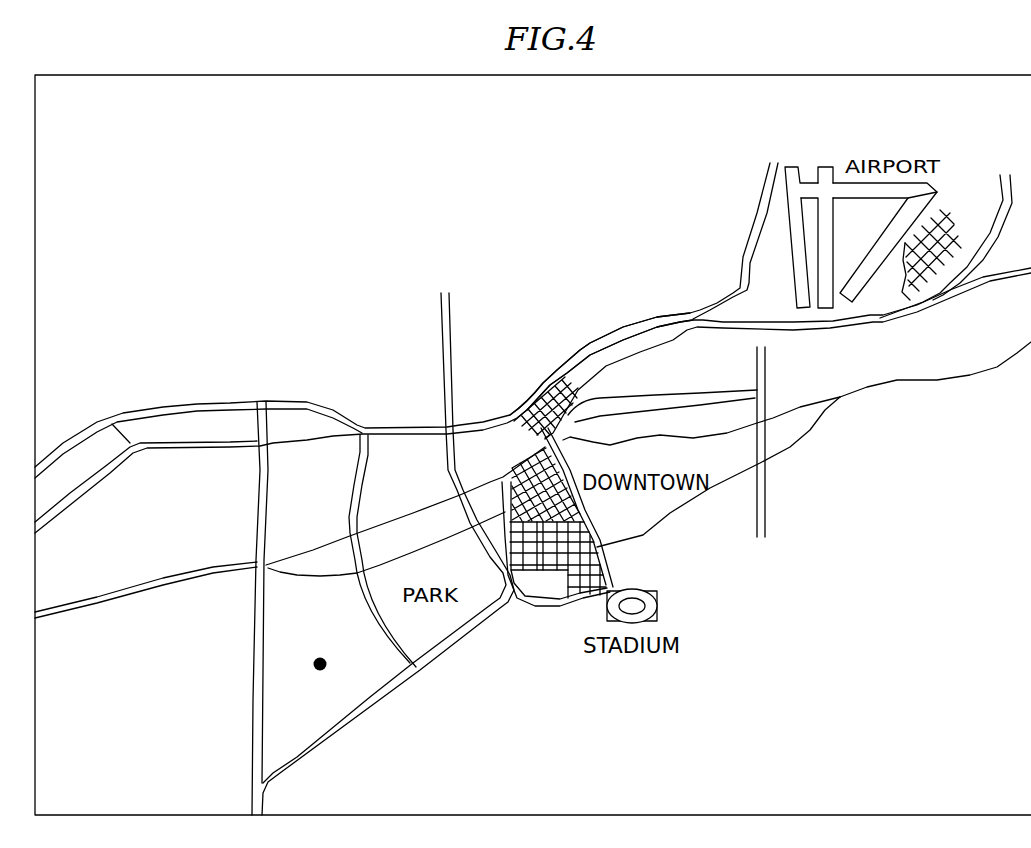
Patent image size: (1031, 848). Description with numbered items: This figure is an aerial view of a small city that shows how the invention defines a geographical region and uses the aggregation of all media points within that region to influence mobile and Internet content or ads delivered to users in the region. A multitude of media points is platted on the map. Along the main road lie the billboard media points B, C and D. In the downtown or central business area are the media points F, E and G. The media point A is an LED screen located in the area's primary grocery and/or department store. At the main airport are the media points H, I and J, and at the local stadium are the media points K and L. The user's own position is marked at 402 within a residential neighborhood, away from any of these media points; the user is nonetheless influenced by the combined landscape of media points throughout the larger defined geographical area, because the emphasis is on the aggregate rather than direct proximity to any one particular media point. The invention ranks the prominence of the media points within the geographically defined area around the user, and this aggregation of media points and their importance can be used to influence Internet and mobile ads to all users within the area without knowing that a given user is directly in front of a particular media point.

The current location indicator 402 is at (325, 669).
The media point A is at (405, 511).
The media point B is at (274, 594).
The media point C is at (388, 554).
The media point D is at (601, 364).
The media point E is at (577, 507).
The media point F is at (538, 417).
The media point G is at (614, 521).
The media point H is at (819, 237).
The media point I is at (824, 237).
The media point J is at (885, 242).
The media point K is at (556, 556).
The media point L is at (663, 589).